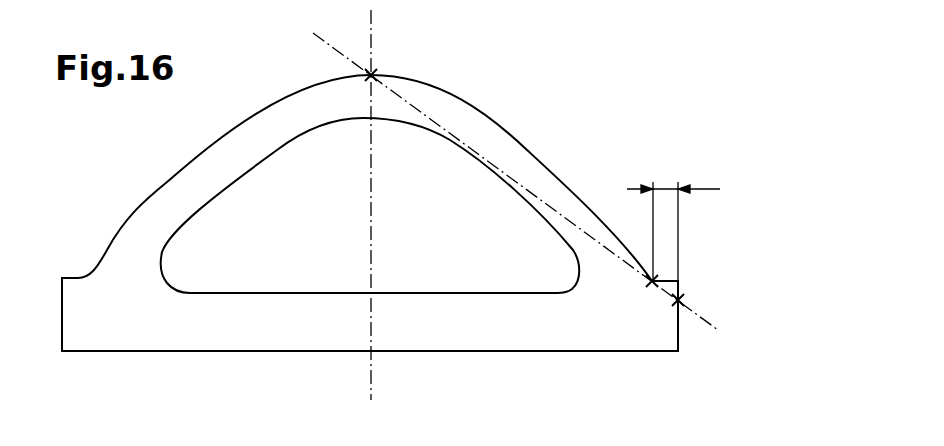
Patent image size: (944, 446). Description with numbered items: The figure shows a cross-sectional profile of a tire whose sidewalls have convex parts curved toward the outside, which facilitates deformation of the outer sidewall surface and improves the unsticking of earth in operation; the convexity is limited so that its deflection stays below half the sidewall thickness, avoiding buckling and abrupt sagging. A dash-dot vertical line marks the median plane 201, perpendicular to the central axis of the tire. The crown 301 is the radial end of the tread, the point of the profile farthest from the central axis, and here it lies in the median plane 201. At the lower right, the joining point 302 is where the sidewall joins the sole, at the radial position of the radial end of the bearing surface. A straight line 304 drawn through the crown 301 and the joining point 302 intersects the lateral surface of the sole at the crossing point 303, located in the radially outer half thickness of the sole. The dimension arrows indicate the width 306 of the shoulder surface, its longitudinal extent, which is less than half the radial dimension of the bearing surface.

The median plane 201 is at (371, 195).
The crown 301 is at (371, 75).
The joining point 302 is at (650, 285).
The crossing point 303 is at (686, 300).
The straight line 304 is at (428, 117).
The width of the shoulder surface 306 is at (708, 189).